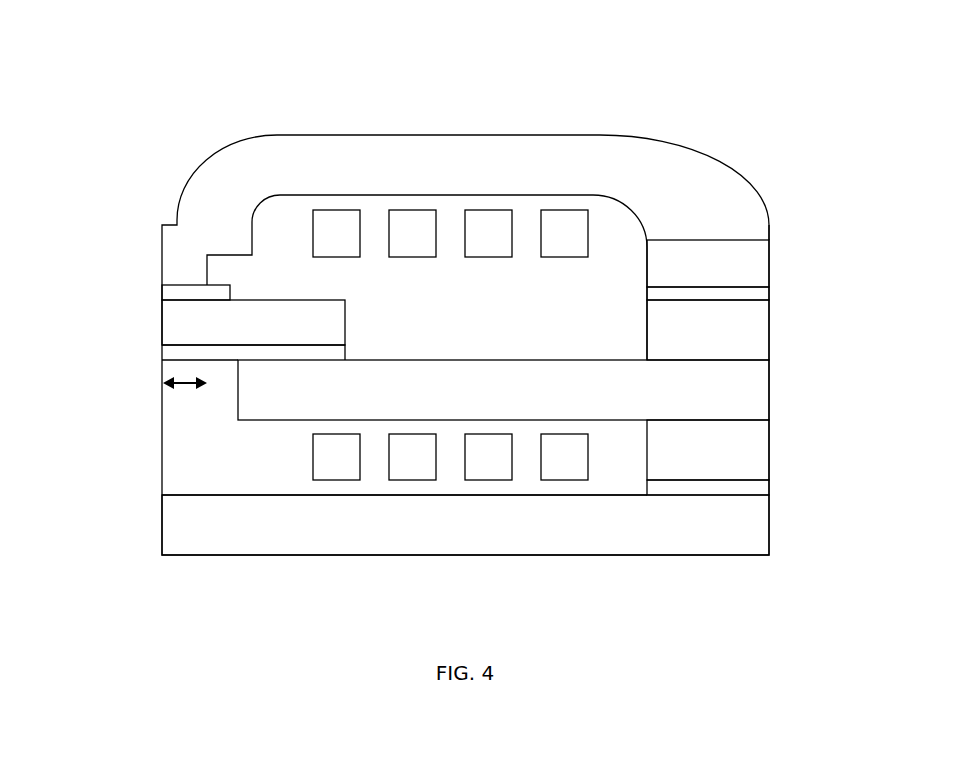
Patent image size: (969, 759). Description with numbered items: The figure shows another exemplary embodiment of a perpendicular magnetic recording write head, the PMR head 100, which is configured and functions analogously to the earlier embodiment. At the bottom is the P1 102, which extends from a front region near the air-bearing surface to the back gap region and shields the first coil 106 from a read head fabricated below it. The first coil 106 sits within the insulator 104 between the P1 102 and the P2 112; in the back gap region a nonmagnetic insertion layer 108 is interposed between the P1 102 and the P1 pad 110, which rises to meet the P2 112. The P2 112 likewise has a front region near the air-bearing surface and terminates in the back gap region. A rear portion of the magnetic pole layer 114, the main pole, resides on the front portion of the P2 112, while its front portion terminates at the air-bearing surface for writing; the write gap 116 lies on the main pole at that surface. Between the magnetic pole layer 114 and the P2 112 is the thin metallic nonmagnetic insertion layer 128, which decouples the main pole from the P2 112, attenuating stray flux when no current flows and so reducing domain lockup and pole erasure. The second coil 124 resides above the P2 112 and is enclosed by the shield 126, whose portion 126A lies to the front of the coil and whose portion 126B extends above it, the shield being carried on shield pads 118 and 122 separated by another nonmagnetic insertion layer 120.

The PMR head 100 is at (445, 27).
The P1 102 is at (161, 530).
The insulator 104 is at (161, 462).
The first coil 106 is at (608, 466).
The nonmagnetic insertion layer 108 is at (771, 489).
The P1 pad 110 is at (769, 445).
The P2 112 is at (769, 400).
The magnetic pole layer 114 is at (161, 325).
The write gap 116 is at (161, 296).
The shield pad 118 is at (769, 337).
The nonmagnetic insertion layer 120 is at (770, 297).
The shield pad 122 is at (738, 240).
The second coil 124 is at (610, 233).
The shield 126 is at (346, 135).
The shield portion 126A is at (148, 206).
The shield portion 126B is at (435, 108).
The nonmagnetic insertion layer 128 is at (162, 352).